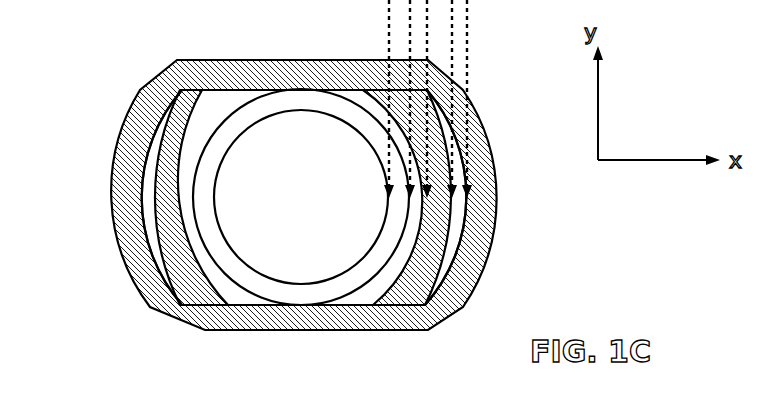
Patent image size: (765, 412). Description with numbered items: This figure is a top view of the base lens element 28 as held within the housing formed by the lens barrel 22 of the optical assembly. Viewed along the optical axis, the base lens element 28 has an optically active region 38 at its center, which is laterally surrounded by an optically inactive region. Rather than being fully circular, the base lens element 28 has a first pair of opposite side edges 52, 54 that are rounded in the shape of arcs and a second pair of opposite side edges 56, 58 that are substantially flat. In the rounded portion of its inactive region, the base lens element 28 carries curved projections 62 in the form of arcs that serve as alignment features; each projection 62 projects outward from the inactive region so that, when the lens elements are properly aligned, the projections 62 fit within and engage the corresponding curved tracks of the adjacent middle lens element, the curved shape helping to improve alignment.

The lens barrel 22 is at (115, 177).
The base lens element 28 is at (235, 165).
The optically active region 38 is at (292, 209).
The rounded side edge 52 is at (145, 215).
The rounded side edge 54 is at (465, 220).
The flat side edge 56 is at (313, 307).
The flat side edge 58 is at (296, 88).
The curved projection 62 is at (198, 281).